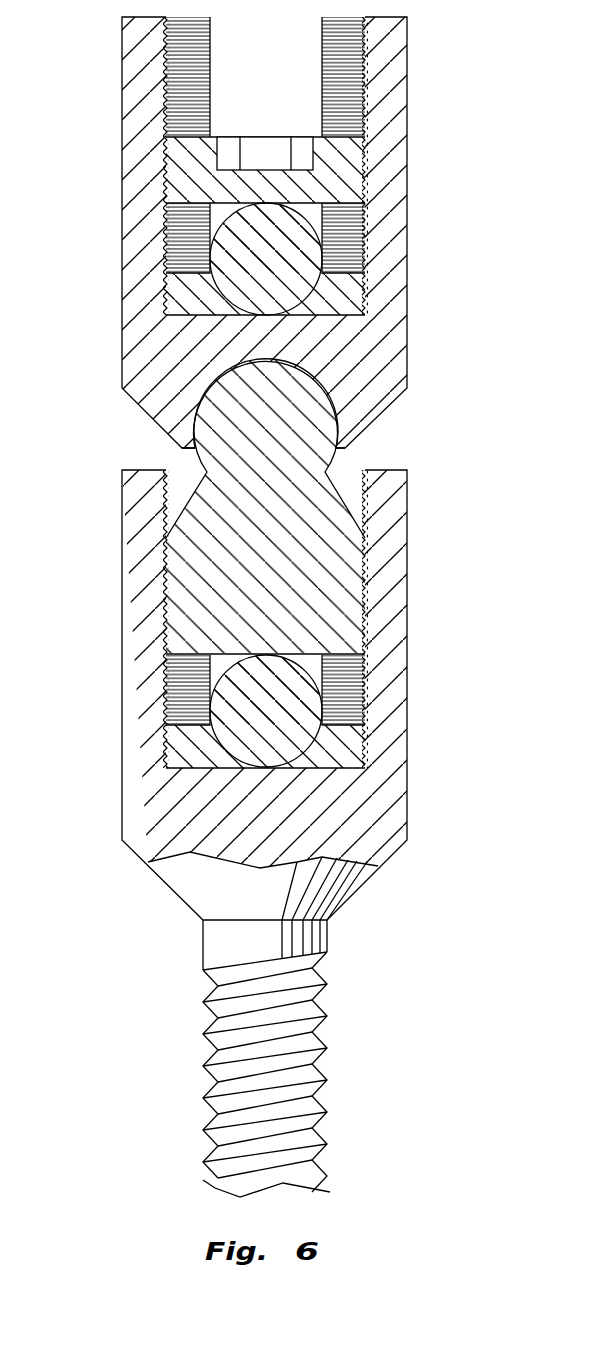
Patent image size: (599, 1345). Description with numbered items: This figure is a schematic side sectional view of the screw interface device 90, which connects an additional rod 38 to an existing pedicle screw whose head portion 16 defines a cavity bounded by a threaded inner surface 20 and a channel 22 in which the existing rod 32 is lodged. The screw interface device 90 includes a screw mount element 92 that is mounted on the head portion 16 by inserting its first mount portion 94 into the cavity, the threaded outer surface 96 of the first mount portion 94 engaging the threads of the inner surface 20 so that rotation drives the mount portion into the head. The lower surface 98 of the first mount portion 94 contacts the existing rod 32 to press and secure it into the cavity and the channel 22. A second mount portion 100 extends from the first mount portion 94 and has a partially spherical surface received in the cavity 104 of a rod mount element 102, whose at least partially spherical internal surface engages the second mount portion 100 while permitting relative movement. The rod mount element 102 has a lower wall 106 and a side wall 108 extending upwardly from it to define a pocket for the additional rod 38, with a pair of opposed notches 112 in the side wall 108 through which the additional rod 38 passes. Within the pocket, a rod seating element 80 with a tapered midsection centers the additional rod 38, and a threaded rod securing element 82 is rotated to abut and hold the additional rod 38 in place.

The head portion 16 is at (373, 805).
The inner surface 20 is at (172, 714).
The channel 22 is at (223, 662).
The existing rod 32 is at (283, 718).
The additional rod 38 is at (295, 255).
The rod seating element 80 is at (185, 283).
The rod securing element 82 is at (197, 162).
The screw interface device 90 is at (430, 320).
The screw mount element 92 is at (313, 568).
The first mount portion 94 is at (343, 615).
The threaded outer surface 96 is at (167, 572).
The lower surface 98 is at (333, 657).
The second mount portion 100 is at (295, 415).
The rod mount element 102 is at (393, 278).
The cavity 104 is at (333, 402).
The lower wall 106 is at (170, 352).
The side wall 108 is at (383, 103).
The opposed notches 112 is at (215, 212).